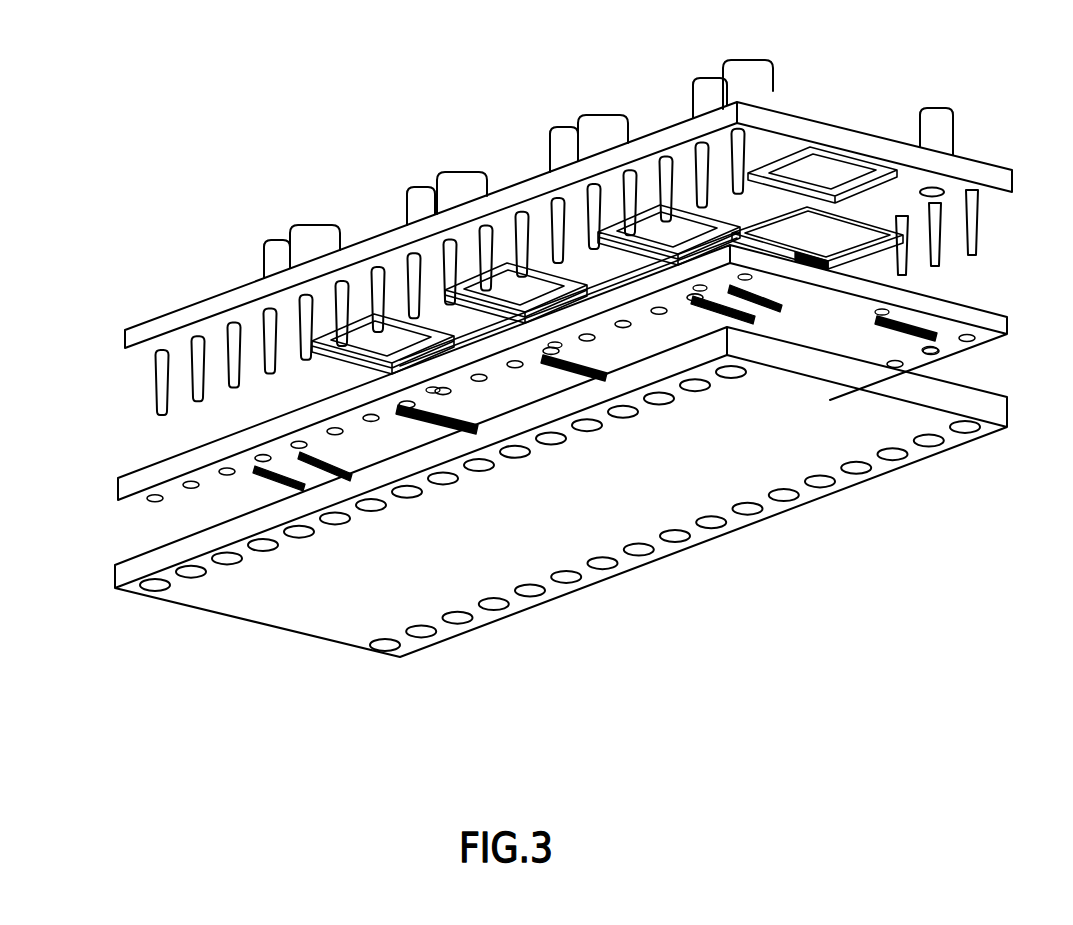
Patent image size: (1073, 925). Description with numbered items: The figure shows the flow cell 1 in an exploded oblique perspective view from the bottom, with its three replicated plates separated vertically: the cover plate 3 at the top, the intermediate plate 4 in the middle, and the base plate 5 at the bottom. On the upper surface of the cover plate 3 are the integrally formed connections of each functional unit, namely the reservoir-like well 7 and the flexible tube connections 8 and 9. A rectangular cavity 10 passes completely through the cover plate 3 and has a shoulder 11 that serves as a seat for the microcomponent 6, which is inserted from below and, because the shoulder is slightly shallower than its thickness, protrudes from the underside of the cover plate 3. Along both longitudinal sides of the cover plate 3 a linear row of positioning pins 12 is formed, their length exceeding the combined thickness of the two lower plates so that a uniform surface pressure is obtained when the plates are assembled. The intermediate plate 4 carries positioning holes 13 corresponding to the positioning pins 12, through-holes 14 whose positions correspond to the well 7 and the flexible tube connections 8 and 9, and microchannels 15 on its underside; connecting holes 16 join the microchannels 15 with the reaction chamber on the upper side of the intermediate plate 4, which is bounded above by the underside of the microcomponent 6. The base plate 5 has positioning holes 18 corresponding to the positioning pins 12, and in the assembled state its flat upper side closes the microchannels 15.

The connector assembly 1 is at (487, 125).
The cover plate 3 is at (382, 234).
The intermediate plate 4 is at (145, 478).
The base plate 5 is at (302, 592).
The microcomponent 6 is at (856, 249).
The well 7 is at (770, 128).
The flexible tube connection 8 is at (722, 160).
The flexible tube connection 9 is at (940, 188).
The cavity 10 is at (806, 177).
The shoulder 11 is at (868, 183).
The positioning pins 12 is at (215, 330).
The positioning holes 13 is at (193, 488).
The through-holes 14 is at (918, 322).
The microchannels 15 is at (878, 322).
The connecting holes 16 is at (862, 330).
The positioning holes 18 is at (225, 583).